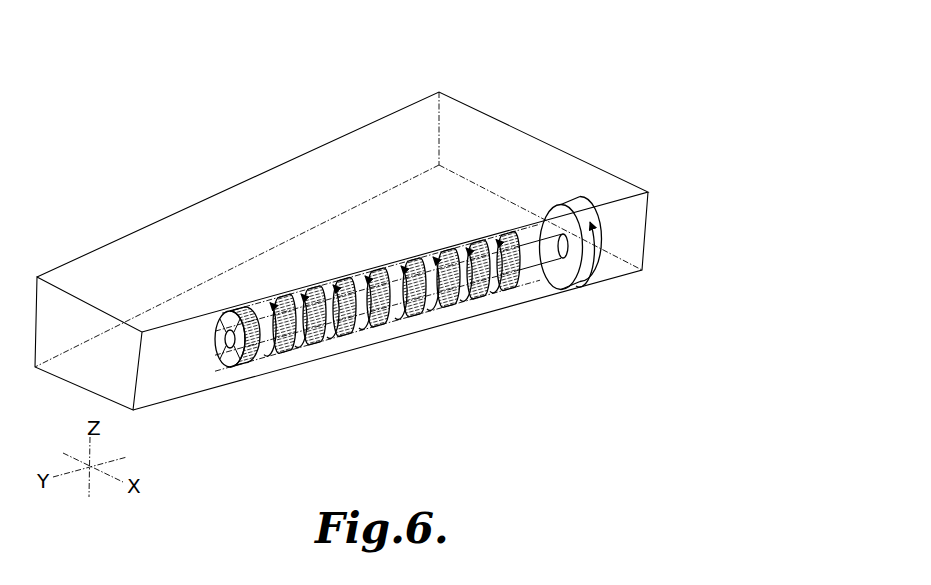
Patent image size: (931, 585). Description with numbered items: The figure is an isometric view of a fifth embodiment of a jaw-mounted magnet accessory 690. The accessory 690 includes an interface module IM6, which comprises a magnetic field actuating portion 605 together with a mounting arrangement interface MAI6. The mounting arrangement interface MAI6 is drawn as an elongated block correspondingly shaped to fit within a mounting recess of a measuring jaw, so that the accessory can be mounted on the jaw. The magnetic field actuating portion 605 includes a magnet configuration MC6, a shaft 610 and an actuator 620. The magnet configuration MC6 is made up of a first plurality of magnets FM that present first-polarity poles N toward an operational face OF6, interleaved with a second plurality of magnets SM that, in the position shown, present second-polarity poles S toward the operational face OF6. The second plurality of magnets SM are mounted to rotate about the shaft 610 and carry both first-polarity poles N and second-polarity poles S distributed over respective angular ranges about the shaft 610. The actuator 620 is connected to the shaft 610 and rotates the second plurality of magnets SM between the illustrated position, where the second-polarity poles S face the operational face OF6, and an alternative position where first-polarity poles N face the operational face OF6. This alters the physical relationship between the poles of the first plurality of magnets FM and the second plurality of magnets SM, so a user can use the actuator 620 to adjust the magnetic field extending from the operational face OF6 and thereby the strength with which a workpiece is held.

The jaw-mounted magnet accessory 690 is at (197, 32).
The interface module IM6 is at (745, 30).
The mounting arrangement interface MAI6 is at (463, 103).
The magnetic field actuating portion 605 is at (675, 63).
The magnet configuration MC6 is at (415, 245).
The shaft 610 is at (530, 257).
The actuator 620 is at (580, 205).
The operational face OF6 is at (285, 352).
The first plurality of magnets FM is at (448, 280).
The second plurality of magnets SM is at (397, 297).